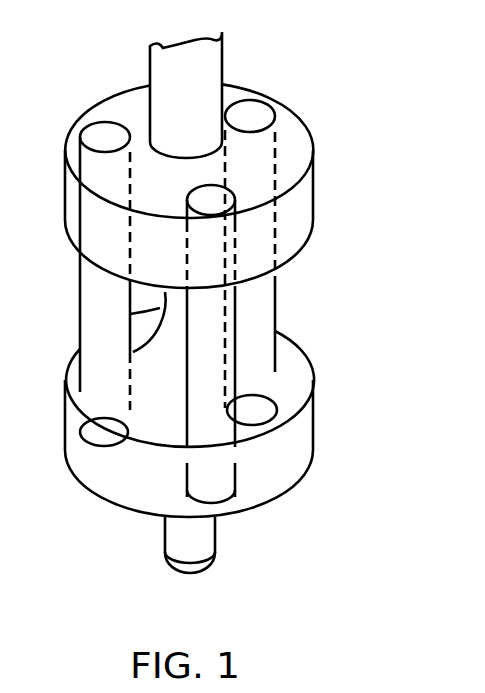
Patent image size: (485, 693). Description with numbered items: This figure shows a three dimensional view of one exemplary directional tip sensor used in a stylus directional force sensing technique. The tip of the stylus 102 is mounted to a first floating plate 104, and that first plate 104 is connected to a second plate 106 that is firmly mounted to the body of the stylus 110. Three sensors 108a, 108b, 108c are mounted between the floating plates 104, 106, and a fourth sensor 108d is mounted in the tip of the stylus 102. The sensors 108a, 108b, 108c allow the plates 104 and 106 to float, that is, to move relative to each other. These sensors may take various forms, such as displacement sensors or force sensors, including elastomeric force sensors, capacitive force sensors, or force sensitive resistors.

The tip of a stylus 102 is at (156, 540).
The first floating plate 104 is at (300, 437).
The second plate 106 is at (297, 157).
The sensor 108a is at (92, 302).
The sensor 108b is at (219, 375).
The sensor 108c is at (263, 307).
The fourth sensor 108d is at (197, 551).
The body of the stylus 110 is at (203, 82).